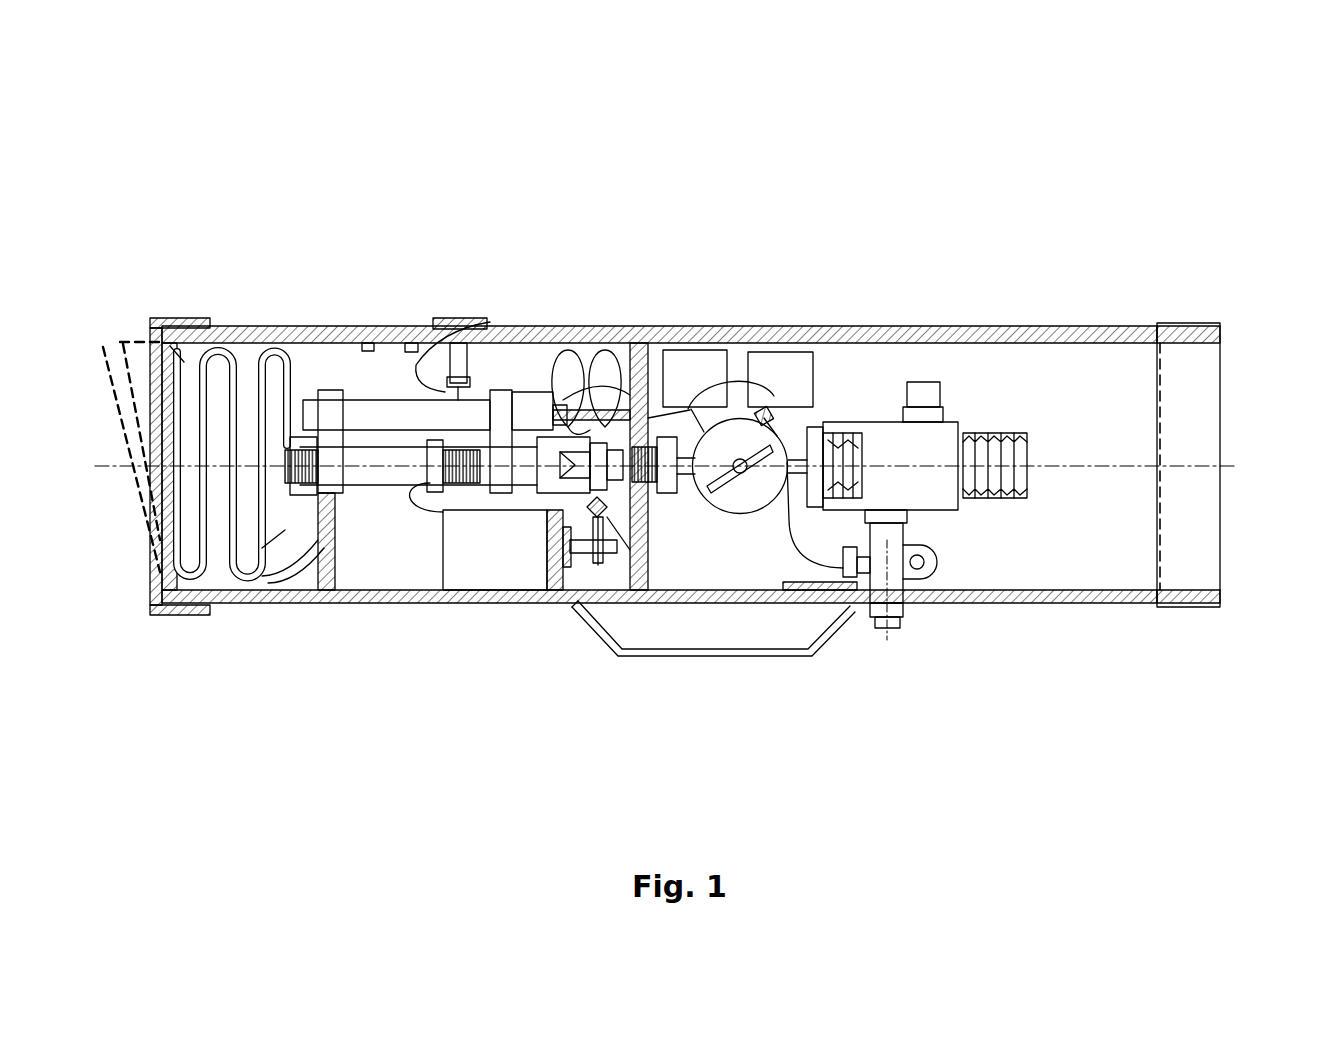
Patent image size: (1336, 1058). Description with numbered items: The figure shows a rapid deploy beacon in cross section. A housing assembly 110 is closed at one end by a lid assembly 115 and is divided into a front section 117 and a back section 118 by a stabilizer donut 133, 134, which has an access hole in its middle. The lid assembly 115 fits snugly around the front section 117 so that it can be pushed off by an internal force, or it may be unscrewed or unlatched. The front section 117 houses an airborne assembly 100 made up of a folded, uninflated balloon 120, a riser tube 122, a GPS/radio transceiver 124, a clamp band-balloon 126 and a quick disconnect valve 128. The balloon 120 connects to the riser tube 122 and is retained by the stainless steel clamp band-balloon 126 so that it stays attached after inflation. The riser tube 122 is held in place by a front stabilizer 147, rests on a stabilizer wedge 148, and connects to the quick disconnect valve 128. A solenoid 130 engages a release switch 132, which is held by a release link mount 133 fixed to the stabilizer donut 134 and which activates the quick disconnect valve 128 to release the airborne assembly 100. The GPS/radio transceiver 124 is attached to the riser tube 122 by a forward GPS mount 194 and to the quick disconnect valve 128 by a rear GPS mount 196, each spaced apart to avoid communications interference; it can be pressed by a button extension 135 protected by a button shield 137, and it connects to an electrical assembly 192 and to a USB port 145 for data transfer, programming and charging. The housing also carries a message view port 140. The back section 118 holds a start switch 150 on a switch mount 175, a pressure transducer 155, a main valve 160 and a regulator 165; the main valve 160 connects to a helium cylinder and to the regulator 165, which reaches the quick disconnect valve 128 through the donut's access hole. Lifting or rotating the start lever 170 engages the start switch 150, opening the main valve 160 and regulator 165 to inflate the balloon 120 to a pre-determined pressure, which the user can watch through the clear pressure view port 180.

The airborne assembly 100 is at (177, 440).
The housing assembly 110 is at (302, 323).
The lid assembly 115 is at (193, 317).
The front section 117 is at (396, 397).
The back section 118 is at (1154, 465).
The balloon 120 is at (233, 587).
The riser tube 122 is at (411, 553).
The GPS/radio transceiver 124 is at (560, 394).
The clamp band-balloon 126 is at (307, 549).
The quick disconnect valve 128 is at (535, 497).
The solenoid 130 is at (493, 594).
The release switch 132 is at (622, 560).
The stabilizer donut 133 is at (650, 343).
The stabilizer donut 134 is at (606, 518).
The button extension 135 is at (459, 318).
The button shield 137 is at (490, 322).
The message view port 140 is at (368, 341).
The USB port 145 is at (411, 341).
The front stabilizer 147 is at (368, 497).
The stabilizer wedge 148 is at (322, 530).
The start switch 150 is at (878, 566).
The pressure transducer 155 is at (775, 415).
The main valve 160 is at (959, 417).
The regulator 165 is at (783, 349).
The start lever 170 is at (822, 658).
The switch mount 175 is at (822, 584).
The pressure view port 180 is at (730, 328).
The electrical assembly 192 is at (598, 345).
The forward GPS mount 194 is at (330, 388).
The rear GPS mount 196 is at (507, 393).